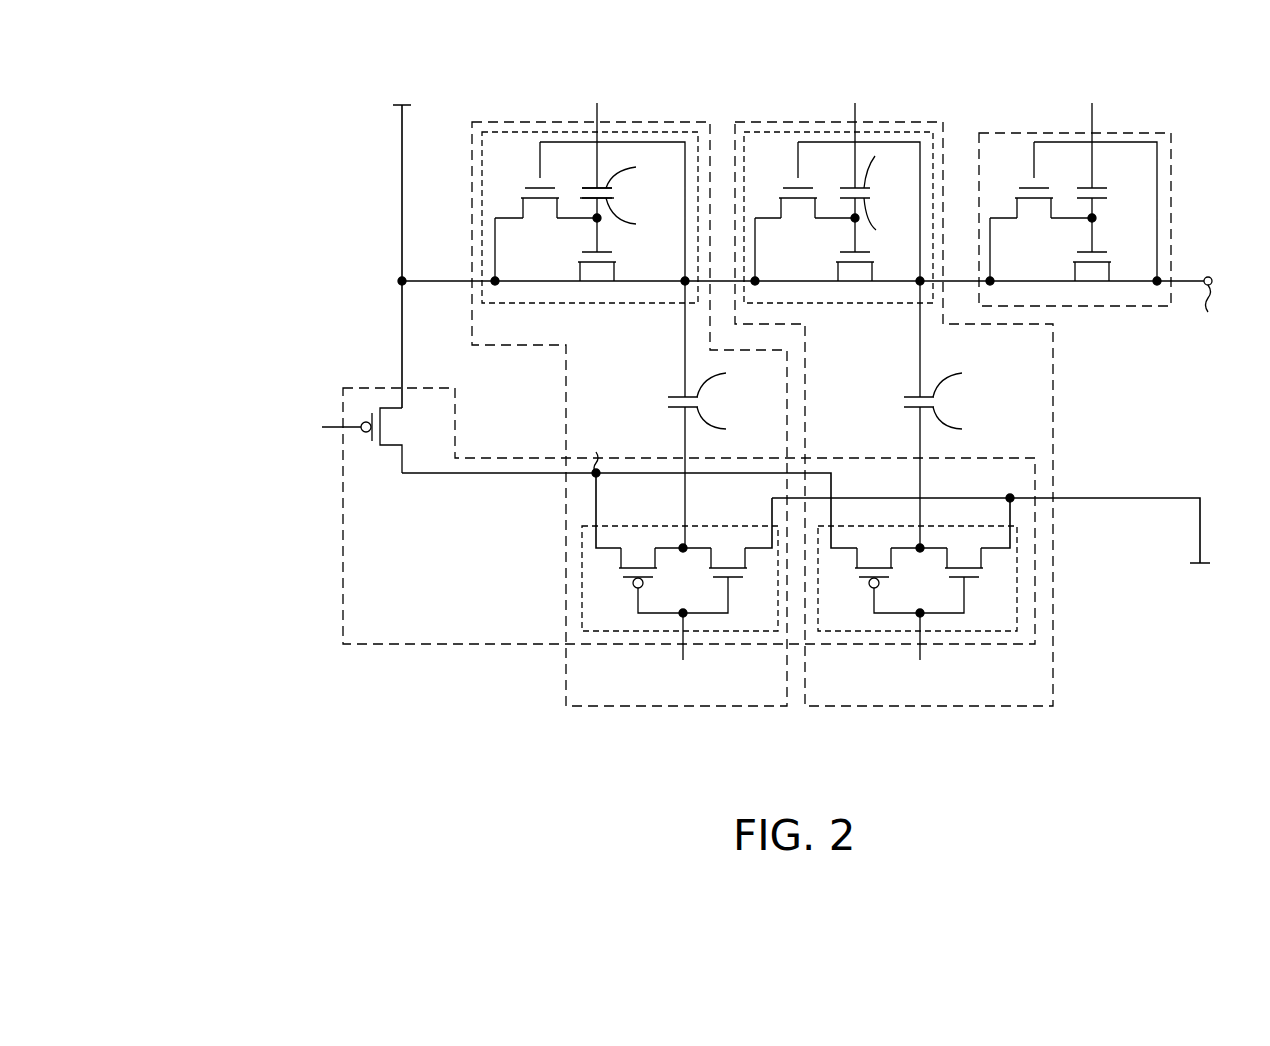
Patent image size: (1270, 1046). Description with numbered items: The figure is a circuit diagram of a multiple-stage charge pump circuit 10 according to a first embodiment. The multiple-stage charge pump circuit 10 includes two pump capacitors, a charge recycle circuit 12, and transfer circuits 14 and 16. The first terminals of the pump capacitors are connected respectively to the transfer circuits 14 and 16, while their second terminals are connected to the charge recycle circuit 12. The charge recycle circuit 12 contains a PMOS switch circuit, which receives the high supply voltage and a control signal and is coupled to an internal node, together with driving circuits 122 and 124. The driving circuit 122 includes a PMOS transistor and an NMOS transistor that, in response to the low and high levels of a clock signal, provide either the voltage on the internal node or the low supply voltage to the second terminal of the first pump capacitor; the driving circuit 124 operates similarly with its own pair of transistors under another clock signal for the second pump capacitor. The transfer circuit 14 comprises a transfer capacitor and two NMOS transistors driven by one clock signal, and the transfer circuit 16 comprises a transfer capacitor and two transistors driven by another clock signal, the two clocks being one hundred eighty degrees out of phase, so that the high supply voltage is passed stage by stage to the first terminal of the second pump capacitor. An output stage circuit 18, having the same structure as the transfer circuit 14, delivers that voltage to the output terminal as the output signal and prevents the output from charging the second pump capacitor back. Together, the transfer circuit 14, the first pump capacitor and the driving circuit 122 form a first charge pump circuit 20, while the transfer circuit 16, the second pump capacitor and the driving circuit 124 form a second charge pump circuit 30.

The multiple-stage charge pump circuit 10 is at (231, 97).
The charge recycle circuit 12 is at (430, 646).
The transfer circuit 14 is at (622, 305).
The transfer circuit 16 is at (850, 305).
The output stage circuit 18 is at (1118, 308).
The first charge pump circuit 20 is at (665, 708).
The second charge pump circuit 30 is at (905, 708).
The driving circuit 122 is at (581, 573).
The driving circuit 124 is at (1017, 578).